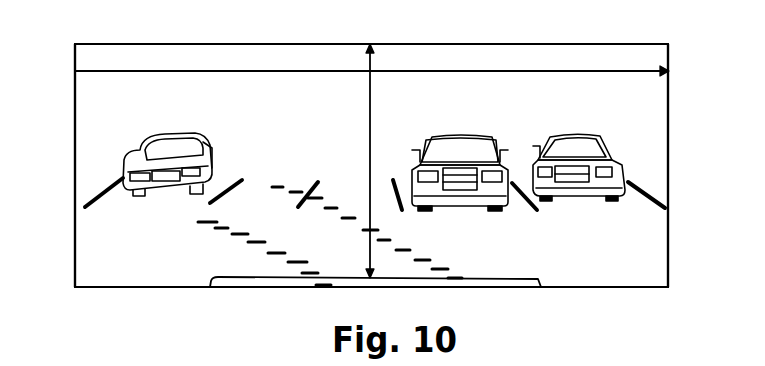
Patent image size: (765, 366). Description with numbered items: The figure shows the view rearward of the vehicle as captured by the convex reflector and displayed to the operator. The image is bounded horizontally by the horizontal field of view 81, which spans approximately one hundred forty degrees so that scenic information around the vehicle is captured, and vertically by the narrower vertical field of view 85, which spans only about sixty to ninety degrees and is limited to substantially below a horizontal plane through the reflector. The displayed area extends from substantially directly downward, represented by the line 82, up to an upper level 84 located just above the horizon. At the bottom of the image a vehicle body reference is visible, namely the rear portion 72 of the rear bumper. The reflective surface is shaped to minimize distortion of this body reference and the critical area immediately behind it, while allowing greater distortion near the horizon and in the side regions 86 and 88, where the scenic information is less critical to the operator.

The rear portion of rear bumper 72 is at (520, 268).
The horizontal field of view 81 is at (273, 72).
The line representing substantially directly downward 82 is at (590, 290).
The upper level 84 is at (363, 44).
The vertical field of view 85 is at (370, 118).
The side region of the image 86 is at (668, 158).
The side region of the image 88 is at (75, 158).